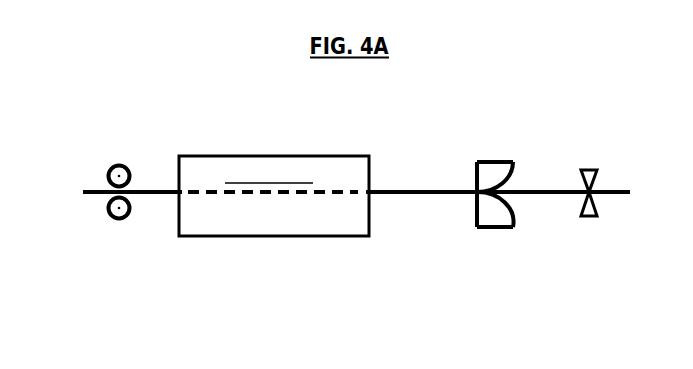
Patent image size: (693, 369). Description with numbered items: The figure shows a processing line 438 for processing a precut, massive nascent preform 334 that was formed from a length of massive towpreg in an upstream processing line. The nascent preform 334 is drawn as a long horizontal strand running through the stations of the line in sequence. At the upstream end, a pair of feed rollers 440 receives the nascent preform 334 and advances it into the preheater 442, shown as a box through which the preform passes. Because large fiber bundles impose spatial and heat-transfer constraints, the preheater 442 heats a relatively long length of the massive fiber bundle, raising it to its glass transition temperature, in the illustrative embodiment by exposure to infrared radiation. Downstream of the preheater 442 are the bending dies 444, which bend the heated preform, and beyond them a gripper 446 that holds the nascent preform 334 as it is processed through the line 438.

The nascent preform 334 is at (150, 180).
The processing line 438 is at (561, 141).
The feed rollers 440 is at (137, 234).
The preheater 442 is at (285, 237).
The bending dies 444 is at (492, 226).
The gripper 446 is at (588, 223).